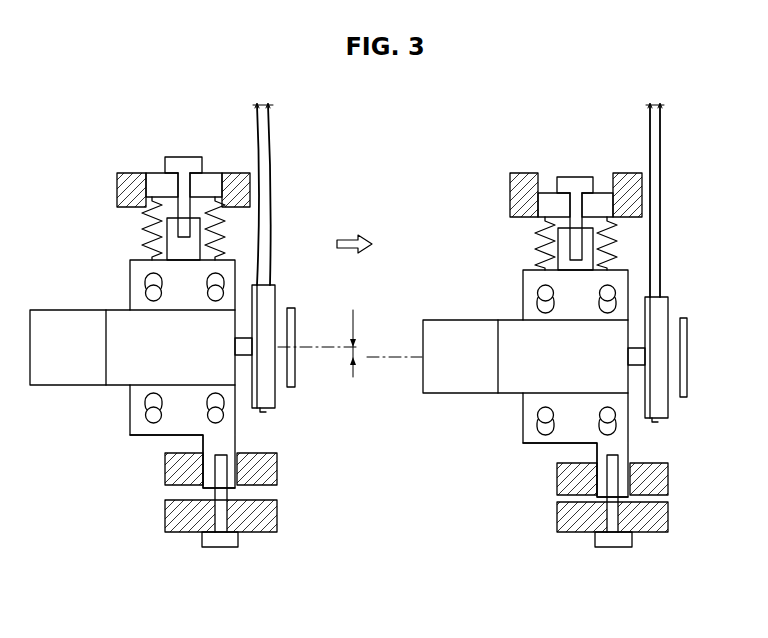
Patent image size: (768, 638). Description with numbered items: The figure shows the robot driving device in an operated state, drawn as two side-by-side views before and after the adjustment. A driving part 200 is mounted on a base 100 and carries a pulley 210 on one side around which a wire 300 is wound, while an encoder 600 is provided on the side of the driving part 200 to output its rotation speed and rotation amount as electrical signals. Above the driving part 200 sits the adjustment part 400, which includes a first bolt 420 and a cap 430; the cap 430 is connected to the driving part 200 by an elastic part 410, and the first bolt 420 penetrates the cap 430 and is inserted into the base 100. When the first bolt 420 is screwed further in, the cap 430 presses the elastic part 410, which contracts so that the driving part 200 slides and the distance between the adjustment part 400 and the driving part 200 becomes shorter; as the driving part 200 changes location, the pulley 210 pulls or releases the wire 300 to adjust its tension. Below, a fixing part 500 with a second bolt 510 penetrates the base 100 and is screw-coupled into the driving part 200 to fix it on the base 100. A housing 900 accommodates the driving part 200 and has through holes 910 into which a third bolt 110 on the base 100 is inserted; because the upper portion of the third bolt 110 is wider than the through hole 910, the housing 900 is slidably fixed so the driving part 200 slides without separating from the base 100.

The base 100 is at (117, 180).
The third bolt 110 is at (143, 417).
The driving part 200 is at (53, 318).
The pulley 210 is at (272, 402).
The wire 300 is at (272, 187).
The adjustment part 400 is at (345, 178).
The elastic part 410 is at (140, 227).
The first bolt 420 is at (173, 157).
The cap 430 is at (212, 178).
The fixing part 500 is at (245, 542).
The second bolt 510 is at (218, 543).
The encoder 600 is at (290, 308).
The housing 900 is at (137, 437).
The through hole 910 is at (148, 400).